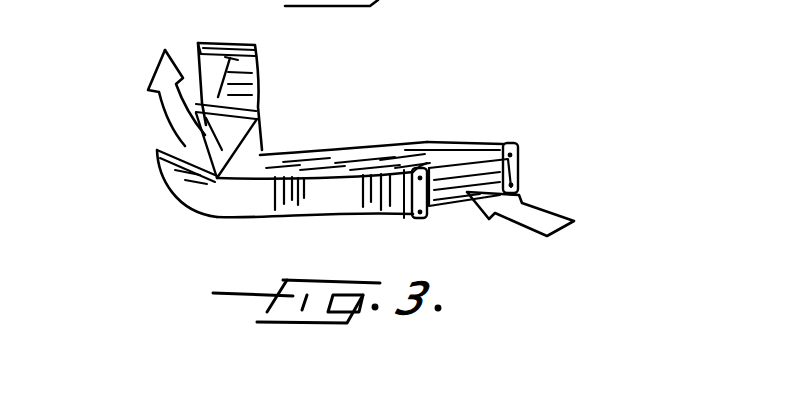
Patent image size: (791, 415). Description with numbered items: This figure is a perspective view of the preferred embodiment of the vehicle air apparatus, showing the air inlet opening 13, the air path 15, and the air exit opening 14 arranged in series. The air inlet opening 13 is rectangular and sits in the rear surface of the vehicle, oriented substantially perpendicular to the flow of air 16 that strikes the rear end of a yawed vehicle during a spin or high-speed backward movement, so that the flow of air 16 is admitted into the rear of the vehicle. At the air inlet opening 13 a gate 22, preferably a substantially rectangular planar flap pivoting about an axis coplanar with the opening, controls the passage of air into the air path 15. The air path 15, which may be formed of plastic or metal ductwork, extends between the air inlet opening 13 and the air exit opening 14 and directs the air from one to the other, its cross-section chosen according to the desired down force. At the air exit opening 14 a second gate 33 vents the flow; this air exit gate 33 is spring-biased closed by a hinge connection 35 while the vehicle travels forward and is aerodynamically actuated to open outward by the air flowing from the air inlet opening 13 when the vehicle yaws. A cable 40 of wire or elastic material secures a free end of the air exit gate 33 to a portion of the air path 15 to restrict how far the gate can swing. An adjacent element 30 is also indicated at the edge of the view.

The air inlet opening 13 is at (517, 157).
The air exit opening 14 is at (177, 139).
The air path 15 is at (285, 222).
The flow of air 16 is at (158, 72).
The gate 22 is at (440, 210).
The adjacent component 30 is at (518, 13).
The gate 33 is at (213, 40).
The hinge connection 35 is at (252, 108).
The cable 40 is at (262, 78).